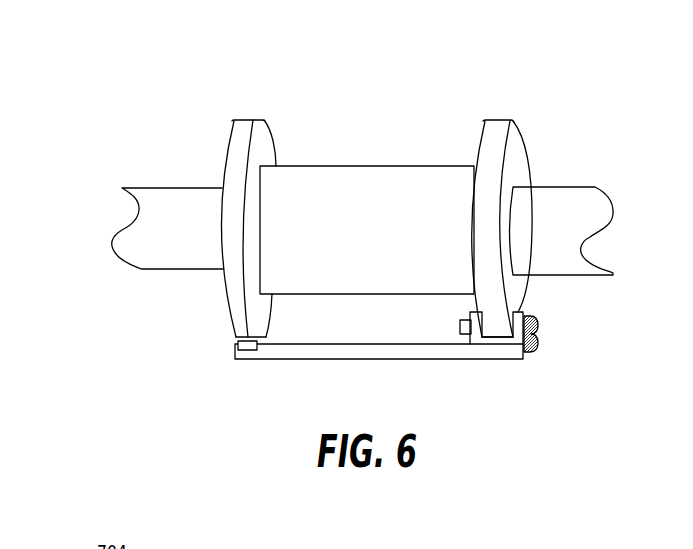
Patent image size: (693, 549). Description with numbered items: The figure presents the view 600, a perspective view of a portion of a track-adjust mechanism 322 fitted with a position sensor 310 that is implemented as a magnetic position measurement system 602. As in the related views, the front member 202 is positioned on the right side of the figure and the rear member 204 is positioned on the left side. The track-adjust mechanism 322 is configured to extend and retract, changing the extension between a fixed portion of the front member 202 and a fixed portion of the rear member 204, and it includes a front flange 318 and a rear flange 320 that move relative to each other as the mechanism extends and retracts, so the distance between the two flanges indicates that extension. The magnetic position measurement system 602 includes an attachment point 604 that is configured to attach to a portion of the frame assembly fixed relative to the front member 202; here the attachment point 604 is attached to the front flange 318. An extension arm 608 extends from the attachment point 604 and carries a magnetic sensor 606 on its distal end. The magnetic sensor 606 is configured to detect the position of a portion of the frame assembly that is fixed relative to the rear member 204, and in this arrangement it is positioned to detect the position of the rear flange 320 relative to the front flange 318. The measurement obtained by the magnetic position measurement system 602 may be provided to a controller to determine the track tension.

The view 600 is at (225, 78).
The front member 202 is at (610, 229).
The rear member 204 is at (118, 229).
The position sensor 310 is at (354, 136).
The front flange 318 is at (501, 120).
The rear flange 320 is at (250, 119).
The track-adjust mechanism 322 is at (580, 128).
The magnetic position measurement system 602 is at (525, 372).
The attachment point 604 is at (537, 318).
The magnetic sensor 606 is at (218, 347).
The extension arm 608 is at (437, 352).